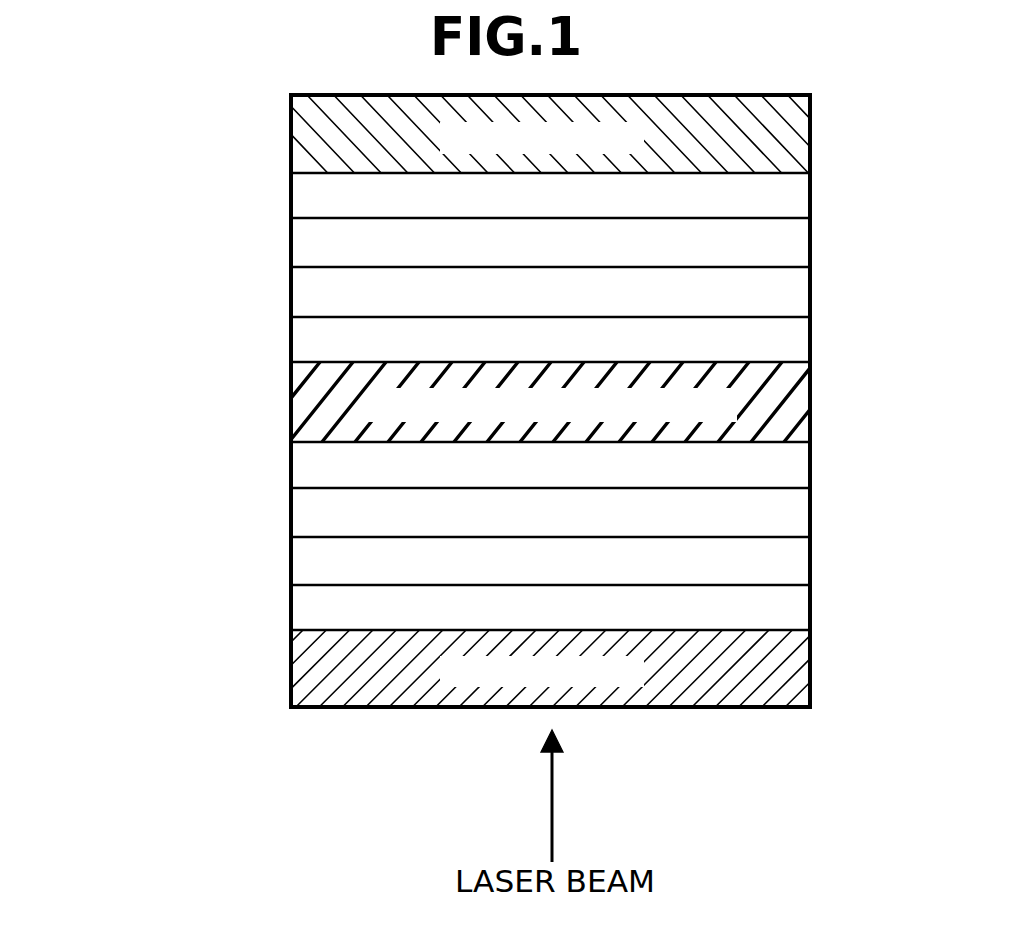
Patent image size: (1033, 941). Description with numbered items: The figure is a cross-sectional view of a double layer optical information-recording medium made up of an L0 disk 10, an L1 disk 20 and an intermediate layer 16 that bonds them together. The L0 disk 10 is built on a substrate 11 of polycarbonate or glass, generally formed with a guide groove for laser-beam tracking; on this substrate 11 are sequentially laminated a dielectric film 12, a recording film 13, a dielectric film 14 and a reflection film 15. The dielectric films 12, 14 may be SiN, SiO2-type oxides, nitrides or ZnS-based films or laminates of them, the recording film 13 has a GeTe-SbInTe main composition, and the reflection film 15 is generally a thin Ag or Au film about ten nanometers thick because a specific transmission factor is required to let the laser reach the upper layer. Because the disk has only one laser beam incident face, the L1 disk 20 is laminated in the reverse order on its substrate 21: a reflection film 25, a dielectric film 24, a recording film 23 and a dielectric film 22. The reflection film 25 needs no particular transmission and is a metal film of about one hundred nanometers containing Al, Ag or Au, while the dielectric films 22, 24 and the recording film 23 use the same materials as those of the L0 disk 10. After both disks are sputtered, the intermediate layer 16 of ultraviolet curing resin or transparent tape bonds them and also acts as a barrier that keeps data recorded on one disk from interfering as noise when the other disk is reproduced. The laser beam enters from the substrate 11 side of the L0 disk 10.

The L0 disk 10 is at (277, 442).
The substrate 11 is at (797, 667).
The dielectric film 12 is at (797, 607).
The recording film 13 is at (797, 562).
The dielectric film 14 is at (797, 514).
The reflection film 15 is at (797, 465).
The intermediate layer 16 is at (797, 400).
The L1 disk 20 is at (273, 100).
The substrate 21 is at (797, 132).
The dielectric film 22 is at (797, 337).
The recording film 23 is at (797, 290).
The dielectric film 24 is at (797, 242).
The reflection film 25 is at (797, 197).